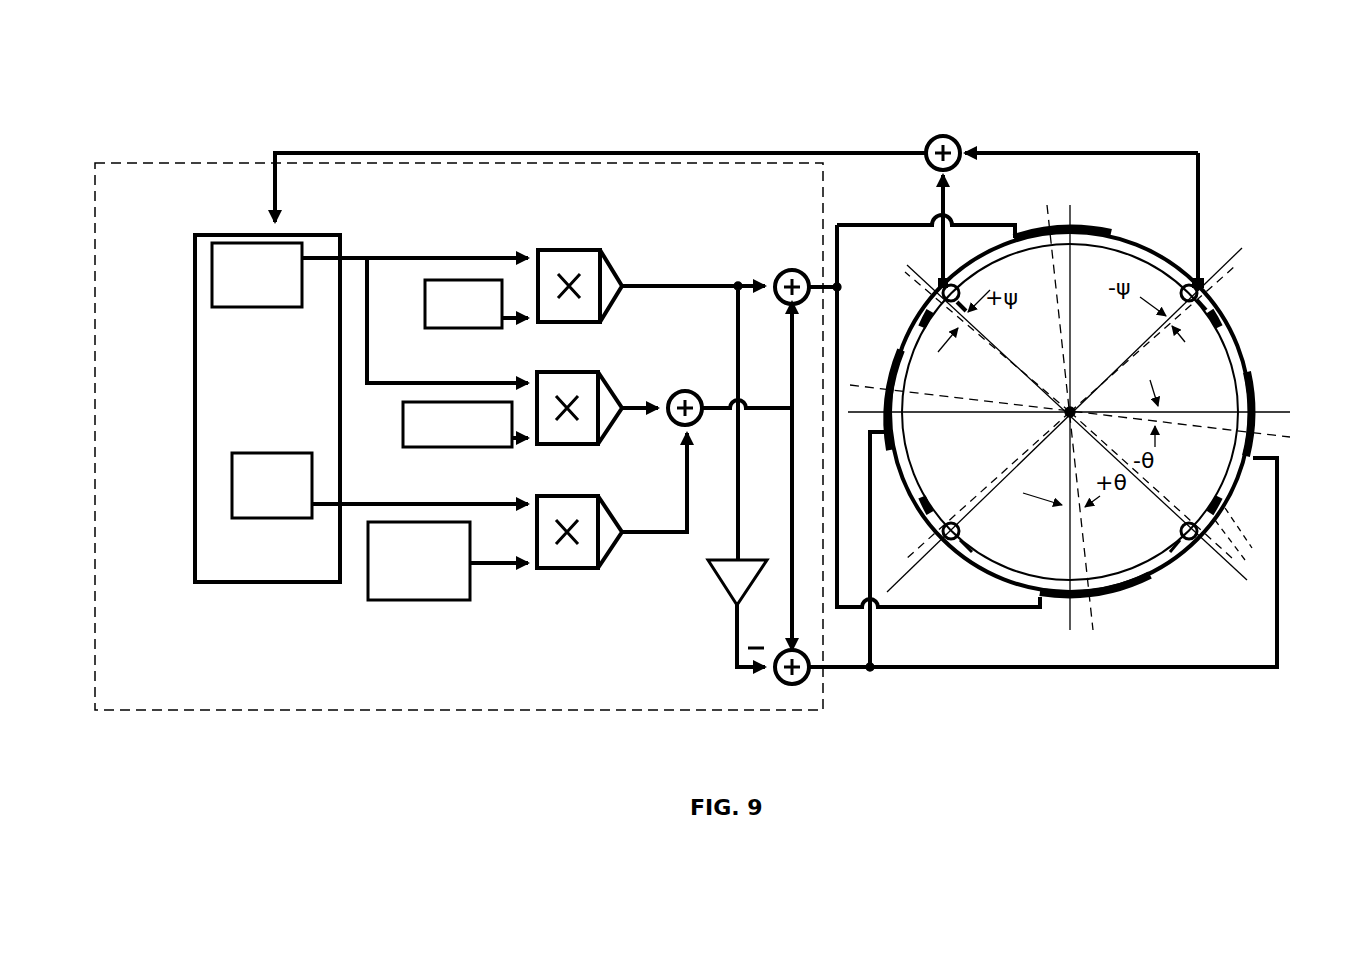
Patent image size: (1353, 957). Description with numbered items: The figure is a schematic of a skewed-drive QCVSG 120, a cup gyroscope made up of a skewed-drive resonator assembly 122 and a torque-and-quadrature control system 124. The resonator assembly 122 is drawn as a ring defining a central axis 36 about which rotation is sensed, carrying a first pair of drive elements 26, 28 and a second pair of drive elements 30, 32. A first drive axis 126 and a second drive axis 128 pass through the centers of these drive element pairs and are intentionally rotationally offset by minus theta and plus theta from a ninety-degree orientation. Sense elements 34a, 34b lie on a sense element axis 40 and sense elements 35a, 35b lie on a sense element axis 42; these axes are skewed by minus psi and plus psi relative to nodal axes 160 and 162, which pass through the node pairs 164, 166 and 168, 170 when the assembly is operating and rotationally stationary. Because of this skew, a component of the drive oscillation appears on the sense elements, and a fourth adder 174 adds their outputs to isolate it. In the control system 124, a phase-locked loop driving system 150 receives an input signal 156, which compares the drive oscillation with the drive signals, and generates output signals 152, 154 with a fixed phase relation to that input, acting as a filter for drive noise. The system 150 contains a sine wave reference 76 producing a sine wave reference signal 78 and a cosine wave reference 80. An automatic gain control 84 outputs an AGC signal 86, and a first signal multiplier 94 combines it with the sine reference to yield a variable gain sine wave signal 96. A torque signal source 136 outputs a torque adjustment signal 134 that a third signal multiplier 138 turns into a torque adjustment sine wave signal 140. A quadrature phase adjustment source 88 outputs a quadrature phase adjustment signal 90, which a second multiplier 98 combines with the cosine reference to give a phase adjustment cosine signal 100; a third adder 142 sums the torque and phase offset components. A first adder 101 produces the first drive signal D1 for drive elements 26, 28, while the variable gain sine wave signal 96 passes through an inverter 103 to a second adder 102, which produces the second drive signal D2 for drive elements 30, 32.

The skewed-drive QCVSG 120 is at (212, 85).
The torque-and-quadrature control system 124 is at (203, 163).
The input signal 156 is at (272, 190).
The phase-locked loop driving system 150 is at (267, 408).
The sine wave reference 76 is at (212, 270).
The cosine wave reference 80 is at (232, 477).
The output signal 152 is at (350, 255).
The sine wave reference signal 78 is at (410, 262).
The automatic gain control (AGC) 84 is at (462, 328).
The AGC signal 86 is at (515, 318).
The torque signal source 136 is at (405, 438).
The torque adjustment signal 134 is at (522, 442).
The quadrature phase adjustment source 88 is at (410, 602).
The quadrature phase adjustment signal 90 is at (490, 565).
The output signal 154 is at (437, 500).
The first signal multiplier 94 is at (610, 275).
The variable gain sine wave signal 96 is at (650, 290).
The third signal multiplier 138 is at (625, 420).
The torque adjustment sine wave signal 140 is at (665, 402).
The third adder 142 is at (695, 392).
The second multiplier 98 is at (622, 528).
The phase adjustment cosine signal 100 is at (647, 532).
The first adder 101 is at (785, 270).
The first drive signal D1 is at (806, 280).
The inverter 103 is at (720, 585).
The second adder 102 is at (770, 682).
The second drive signal D2 is at (847, 682).
The drive element 28 is at (893, 372).
The fourth adder 174 is at (932, 142).
The node 168 is at (958, 290).
The node 164 is at (1185, 285).
The node 166 is at (965, 547).
The node 170 is at (1198, 547).
The skewed-drive resonator assembly 122 is at (1242, 340).
The drive element 30 is at (1082, 236).
The drive element 26 is at (1258, 394).
The drive element 32 is at (1105, 596).
The sense element 35a is at (921, 318).
The sense element 34a is at (1220, 305).
The sense element 34b is at (924, 518).
The sense element 35b is at (1240, 530).
The central axis 36 is at (1062, 416).
The nodal axis 160 is at (1232, 262).
The nodal axis 162 is at (1230, 568).
The sense element axis 40 is at (1245, 264).
The sense element axis 42 is at (1240, 558).
The first drive axis 126 is at (1264, 434).
The second drive axis 128 is at (1092, 630).